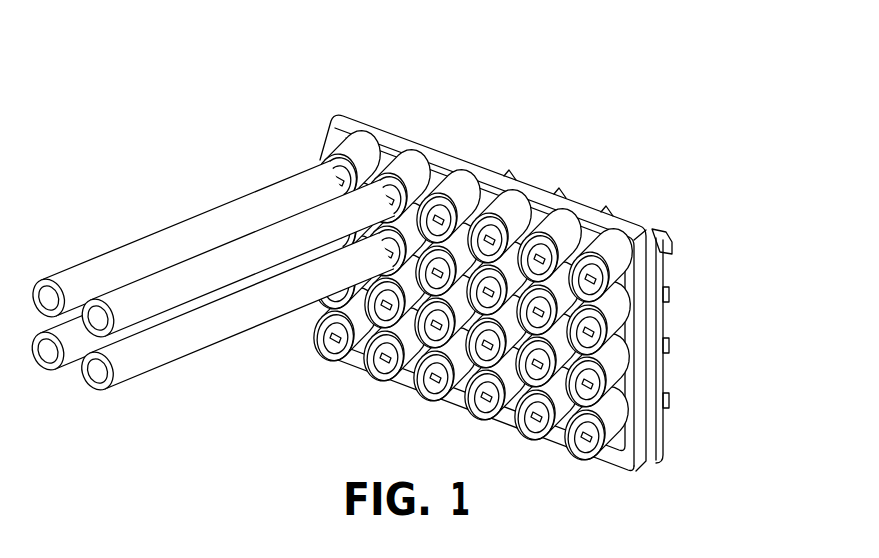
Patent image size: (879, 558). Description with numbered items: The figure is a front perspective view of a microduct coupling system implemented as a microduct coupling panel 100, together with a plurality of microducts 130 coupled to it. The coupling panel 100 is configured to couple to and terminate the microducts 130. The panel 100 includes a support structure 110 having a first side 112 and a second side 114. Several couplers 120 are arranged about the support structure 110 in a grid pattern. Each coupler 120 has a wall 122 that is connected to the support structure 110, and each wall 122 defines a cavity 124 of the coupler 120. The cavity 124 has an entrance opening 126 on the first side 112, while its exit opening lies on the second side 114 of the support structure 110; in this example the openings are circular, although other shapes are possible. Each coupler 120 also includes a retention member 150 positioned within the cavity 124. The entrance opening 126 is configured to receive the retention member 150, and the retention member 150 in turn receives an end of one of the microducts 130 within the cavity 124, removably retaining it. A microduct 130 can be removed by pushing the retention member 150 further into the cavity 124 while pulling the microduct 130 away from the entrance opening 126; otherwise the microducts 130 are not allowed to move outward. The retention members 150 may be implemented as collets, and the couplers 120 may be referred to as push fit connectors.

The microduct coupling panel 100 is at (462, 80).
The support structure 110 is at (660, 432).
The first side 112 is at (617, 230).
The second side 114 is at (635, 222).
The coupler 120 is at (620, 370).
The wall 122 is at (620, 472).
The cavity 124 is at (364, 360).
The entrance opening 126 is at (436, 214).
The microduct 130 is at (78, 264).
The retention member 150 is at (320, 347).